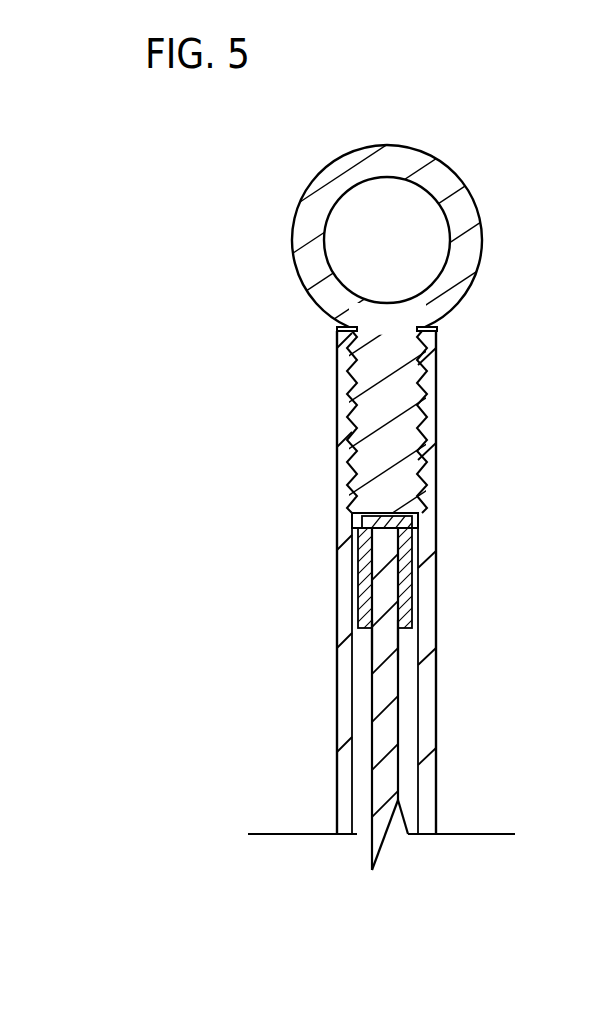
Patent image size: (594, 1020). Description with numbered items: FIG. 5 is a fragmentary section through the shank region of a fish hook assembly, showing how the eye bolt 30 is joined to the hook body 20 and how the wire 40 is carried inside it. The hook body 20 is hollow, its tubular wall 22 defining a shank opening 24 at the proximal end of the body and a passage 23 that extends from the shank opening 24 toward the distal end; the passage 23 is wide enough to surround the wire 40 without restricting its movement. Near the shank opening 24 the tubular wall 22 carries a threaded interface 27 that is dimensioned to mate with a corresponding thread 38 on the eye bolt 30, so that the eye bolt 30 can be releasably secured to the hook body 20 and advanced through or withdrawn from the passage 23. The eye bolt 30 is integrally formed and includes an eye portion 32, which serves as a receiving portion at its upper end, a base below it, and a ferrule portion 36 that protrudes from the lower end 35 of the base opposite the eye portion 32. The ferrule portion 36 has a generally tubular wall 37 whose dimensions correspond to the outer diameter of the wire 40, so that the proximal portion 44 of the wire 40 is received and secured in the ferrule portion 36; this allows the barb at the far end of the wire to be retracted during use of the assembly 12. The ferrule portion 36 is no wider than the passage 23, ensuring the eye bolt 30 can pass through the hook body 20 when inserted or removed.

The anchor assembly 12 is at (520, 135).
The eye bolt 30 is at (322, 173).
The eye portion 32 is at (470, 238).
The shank opening 24 is at (446, 325).
The tubular wall 22 is at (340, 373).
The threaded interface 27 is at (364, 417).
The thread 38 is at (442, 416).
The hook body 20 is at (337, 483).
The tubular wall 37 is at (407, 540).
The lower end 35 is at (366, 567).
The proximal portion 44 is at (380, 639).
The ferrule portion 36 is at (405, 630).
The wire 40 is at (421, 764).
The passage 23 is at (362, 812).